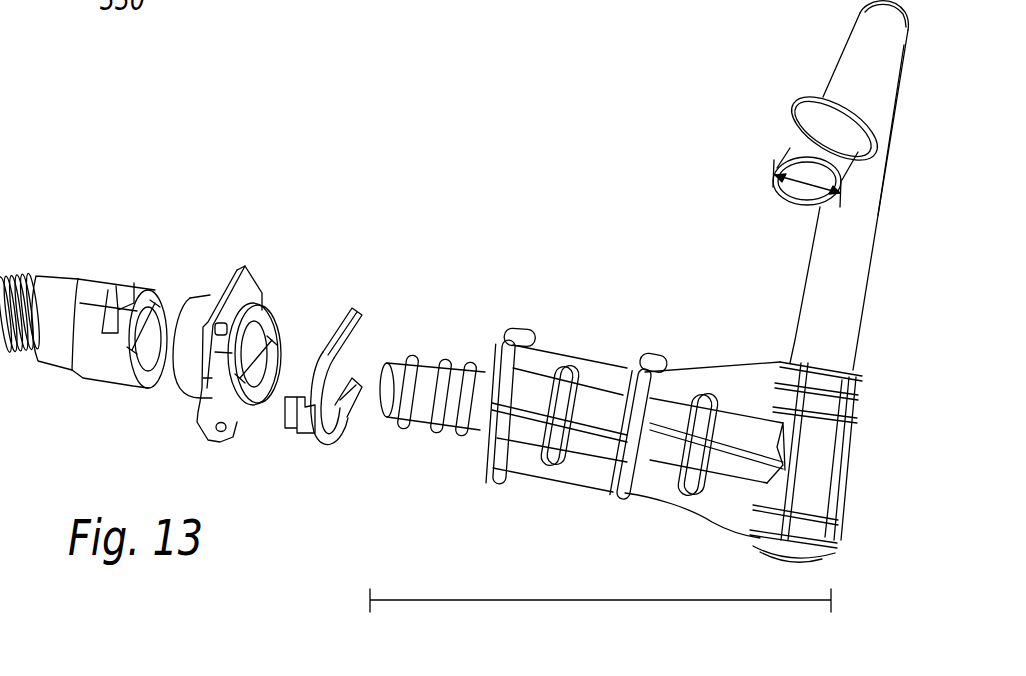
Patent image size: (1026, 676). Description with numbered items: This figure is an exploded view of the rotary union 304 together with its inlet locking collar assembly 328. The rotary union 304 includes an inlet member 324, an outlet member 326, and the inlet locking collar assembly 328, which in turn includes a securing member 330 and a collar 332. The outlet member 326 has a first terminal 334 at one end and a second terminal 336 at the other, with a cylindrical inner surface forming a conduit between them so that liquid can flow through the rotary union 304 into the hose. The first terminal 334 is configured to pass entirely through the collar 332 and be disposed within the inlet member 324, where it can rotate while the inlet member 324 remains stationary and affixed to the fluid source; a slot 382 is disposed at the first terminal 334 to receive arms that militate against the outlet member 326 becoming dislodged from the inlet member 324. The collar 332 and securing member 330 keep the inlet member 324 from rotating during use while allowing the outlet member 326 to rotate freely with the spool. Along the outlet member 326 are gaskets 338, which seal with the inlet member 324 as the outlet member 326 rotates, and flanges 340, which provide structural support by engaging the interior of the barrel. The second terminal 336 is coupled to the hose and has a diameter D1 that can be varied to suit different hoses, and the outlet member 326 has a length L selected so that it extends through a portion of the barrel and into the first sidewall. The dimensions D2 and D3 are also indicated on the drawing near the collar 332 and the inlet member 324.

The rotary union 304 is at (69, 191).
The inlet member 324 is at (73, 290).
The outlet member 326 is at (820, 317).
The inlet locking collar assembly 328 is at (410, 148).
The securing member 330 is at (342, 320).
The collar 332 is at (247, 284).
The first terminal 334 is at (392, 350).
The second terminal 336 is at (813, 136).
The gaskets 338 is at (446, 417).
The flanges 340 is at (617, 500).
The slot 382 is at (448, 365).
The diameter D1 is at (805, 186).
The diameter D2 is at (268, 372).
The diameter D3 is at (156, 372).
The length L is at (617, 600).